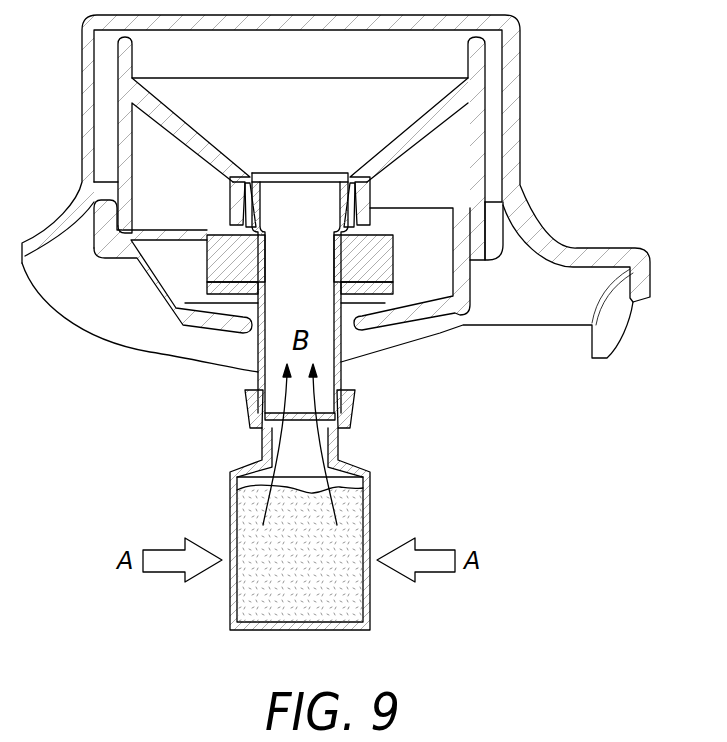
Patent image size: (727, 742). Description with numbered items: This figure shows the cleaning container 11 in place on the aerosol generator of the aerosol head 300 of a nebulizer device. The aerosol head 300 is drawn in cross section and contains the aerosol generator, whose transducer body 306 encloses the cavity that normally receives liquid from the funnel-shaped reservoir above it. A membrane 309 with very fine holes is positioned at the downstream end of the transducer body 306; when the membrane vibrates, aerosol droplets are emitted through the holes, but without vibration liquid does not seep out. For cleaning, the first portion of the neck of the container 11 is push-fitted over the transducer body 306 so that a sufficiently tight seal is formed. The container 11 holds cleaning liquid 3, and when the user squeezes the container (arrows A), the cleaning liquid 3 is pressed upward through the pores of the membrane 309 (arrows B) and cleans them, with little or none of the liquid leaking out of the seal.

The aerosol head 300 is at (522, 70).
The transducer body 306 is at (258, 376).
The membrane 309 is at (330, 420).
The container 11 is at (372, 487).
The cleaning liquid 3 is at (350, 606).